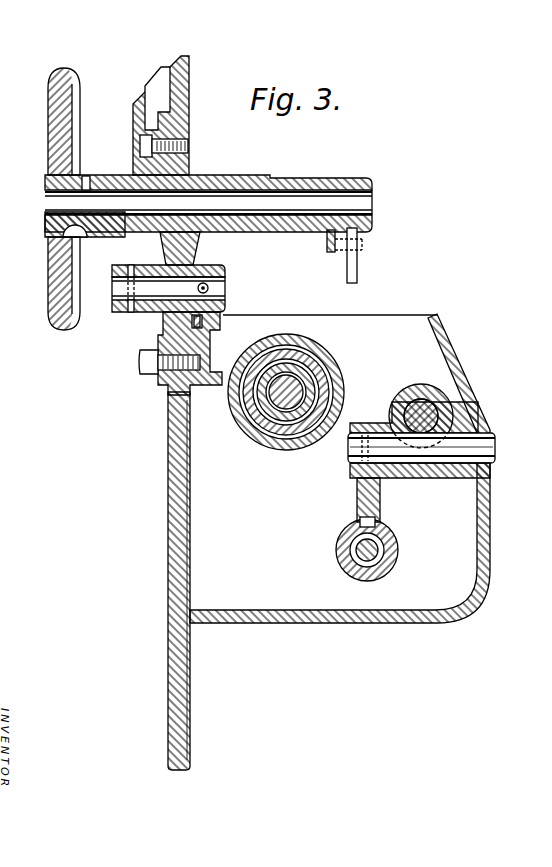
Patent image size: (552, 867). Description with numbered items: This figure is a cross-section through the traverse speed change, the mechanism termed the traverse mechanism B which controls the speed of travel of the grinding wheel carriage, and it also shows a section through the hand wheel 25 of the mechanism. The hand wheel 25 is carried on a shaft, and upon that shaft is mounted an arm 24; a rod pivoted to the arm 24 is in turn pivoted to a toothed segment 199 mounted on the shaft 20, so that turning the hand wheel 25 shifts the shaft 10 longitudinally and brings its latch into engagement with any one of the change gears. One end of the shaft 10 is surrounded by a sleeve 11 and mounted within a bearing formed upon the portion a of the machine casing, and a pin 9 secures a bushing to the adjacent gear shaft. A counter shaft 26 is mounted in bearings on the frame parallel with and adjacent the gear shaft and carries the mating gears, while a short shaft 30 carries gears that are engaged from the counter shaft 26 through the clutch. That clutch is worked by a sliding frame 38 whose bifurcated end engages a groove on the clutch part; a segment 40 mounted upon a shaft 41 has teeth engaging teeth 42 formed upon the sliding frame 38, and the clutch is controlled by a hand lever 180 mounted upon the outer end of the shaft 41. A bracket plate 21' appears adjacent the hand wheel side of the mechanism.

The pin 9 is at (298, 197).
The hand wheel 25 is at (62, 258).
The shaft 41 is at (224, 280).
The segment 40 is at (224, 303).
The teeth 42 is at (203, 324).
The sliding frame 38 is at (222, 339).
The hand lever 180 is at (125, 314).
The traverse mechanism B is at (153, 581).
The casing portion a is at (169, 481).
The short shaft 30 is at (440, 416).
The shaft 20 is at (495, 451).
The toothed segment 199 is at (366, 492).
The sleeve 11 is at (393, 554).
The shaft 10 is at (364, 553).
The counter shaft 26 is at (290, 381).
The bracket plate 21' is at (378, 255).
The arm 24 is at (327, 244).